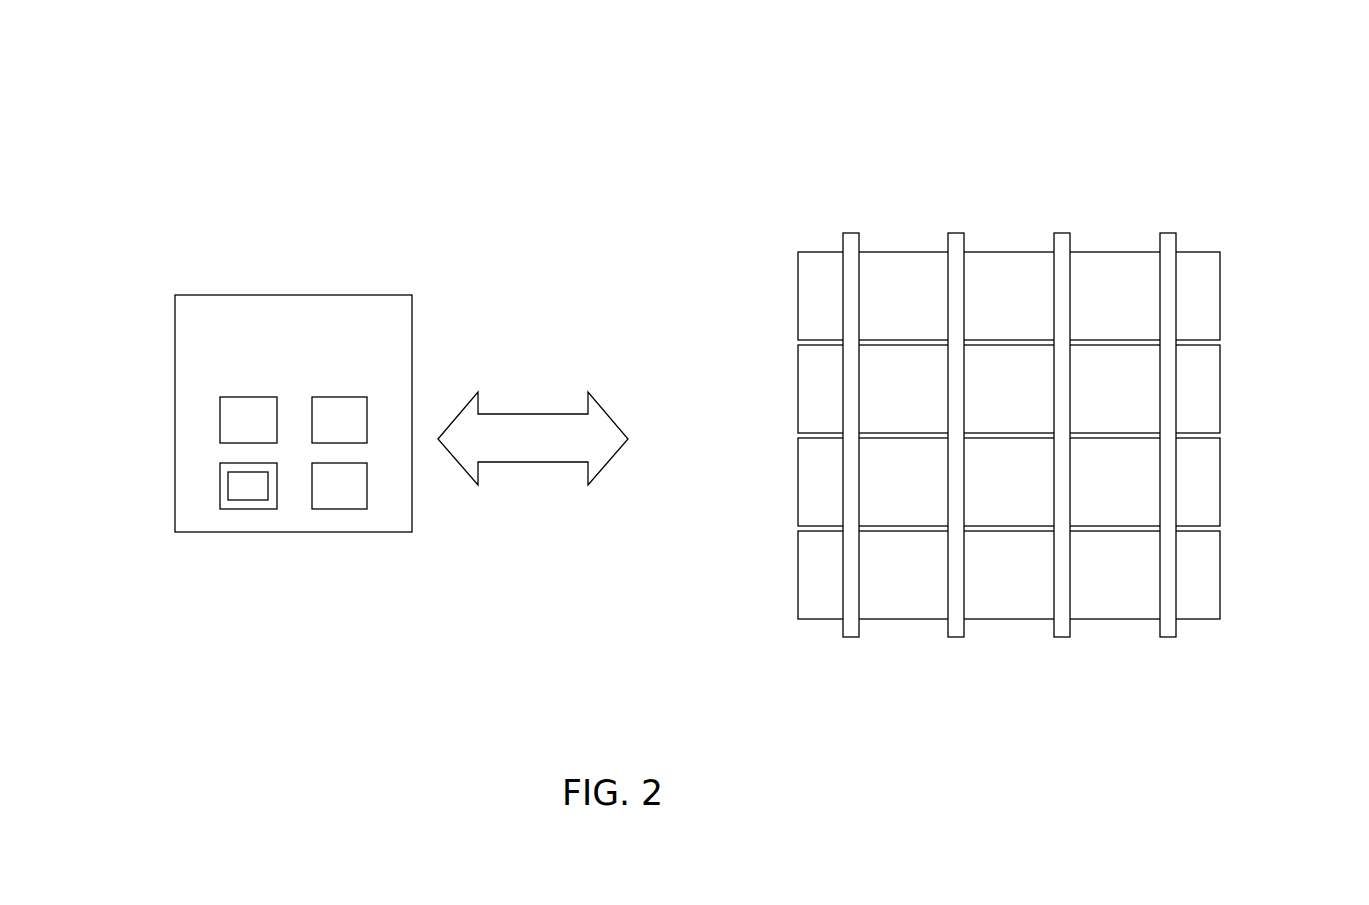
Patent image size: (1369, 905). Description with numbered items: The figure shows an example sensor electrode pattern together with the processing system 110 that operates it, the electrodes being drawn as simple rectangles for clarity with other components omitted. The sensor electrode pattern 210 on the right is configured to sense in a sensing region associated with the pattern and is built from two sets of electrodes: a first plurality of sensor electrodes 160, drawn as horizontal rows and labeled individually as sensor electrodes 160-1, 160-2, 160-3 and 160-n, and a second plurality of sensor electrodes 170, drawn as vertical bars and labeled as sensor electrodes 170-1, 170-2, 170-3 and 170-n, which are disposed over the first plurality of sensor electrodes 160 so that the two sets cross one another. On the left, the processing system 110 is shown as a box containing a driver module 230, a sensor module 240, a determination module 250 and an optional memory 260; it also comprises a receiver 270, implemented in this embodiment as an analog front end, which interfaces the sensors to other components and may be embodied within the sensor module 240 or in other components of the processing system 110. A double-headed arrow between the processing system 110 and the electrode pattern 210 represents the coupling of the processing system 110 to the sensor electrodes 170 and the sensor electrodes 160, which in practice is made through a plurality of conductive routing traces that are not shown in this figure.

The processing system 110 is at (315, 387).
The driver module 230 is at (220, 423).
The memory 260 is at (367, 435).
The sensor module 240 is at (249, 510).
The receiver 270 is at (228, 488).
The determination module 250 is at (338, 510).
The input device / sensor electrode arrangement 210 is at (1008, 379).
The first plurality of sensor electrodes 160 is at (1008, 434).
The sensor electrode 160-1 is at (1202, 292).
The sensor electrode 160-2 is at (1202, 375).
The sensor electrode 160-3 is at (1202, 470).
The sensor electrode 160-n is at (1202, 562).
The second plurality of sensor electrodes 170 is at (1009, 427).
The sensor electrode 170-1 is at (853, 638).
The sensor electrode 170-2 is at (958, 638).
The sensor electrode 170-3 is at (1064, 638).
The sensor electrode 170-n is at (1170, 638).